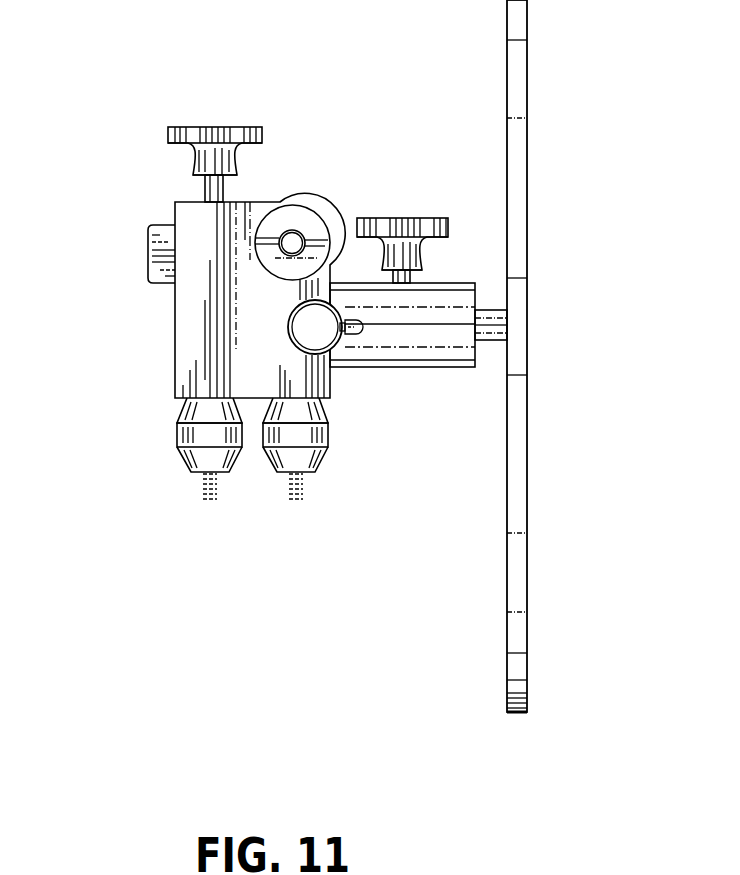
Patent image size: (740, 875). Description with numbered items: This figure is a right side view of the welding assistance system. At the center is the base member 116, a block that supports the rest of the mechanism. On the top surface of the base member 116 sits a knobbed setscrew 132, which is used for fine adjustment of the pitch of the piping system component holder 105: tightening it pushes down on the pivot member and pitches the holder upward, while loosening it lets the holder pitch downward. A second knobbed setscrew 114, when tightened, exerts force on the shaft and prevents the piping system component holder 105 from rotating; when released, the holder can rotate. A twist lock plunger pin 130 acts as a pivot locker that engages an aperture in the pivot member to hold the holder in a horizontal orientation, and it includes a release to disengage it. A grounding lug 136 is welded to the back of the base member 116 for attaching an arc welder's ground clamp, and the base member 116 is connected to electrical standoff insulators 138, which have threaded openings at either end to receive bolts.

The piping system component holder 105 is at (517, 84).
The knobbed setscrew 114 is at (426, 218).
The base member 116 is at (175, 342).
The twist lock plunger pin 130 is at (328, 334).
The knobbed setscrew 132 is at (192, 126).
The grounding lug 136 is at (148, 253).
The electrical standoff insulators 138 is at (328, 436).